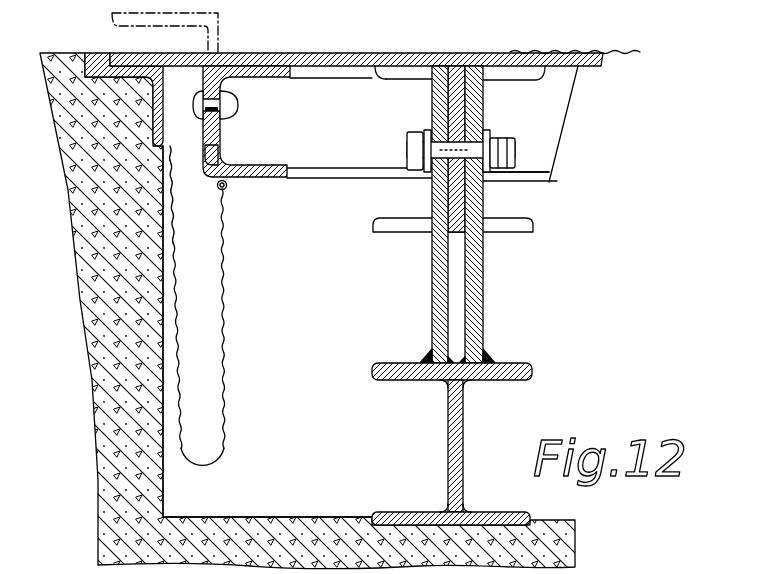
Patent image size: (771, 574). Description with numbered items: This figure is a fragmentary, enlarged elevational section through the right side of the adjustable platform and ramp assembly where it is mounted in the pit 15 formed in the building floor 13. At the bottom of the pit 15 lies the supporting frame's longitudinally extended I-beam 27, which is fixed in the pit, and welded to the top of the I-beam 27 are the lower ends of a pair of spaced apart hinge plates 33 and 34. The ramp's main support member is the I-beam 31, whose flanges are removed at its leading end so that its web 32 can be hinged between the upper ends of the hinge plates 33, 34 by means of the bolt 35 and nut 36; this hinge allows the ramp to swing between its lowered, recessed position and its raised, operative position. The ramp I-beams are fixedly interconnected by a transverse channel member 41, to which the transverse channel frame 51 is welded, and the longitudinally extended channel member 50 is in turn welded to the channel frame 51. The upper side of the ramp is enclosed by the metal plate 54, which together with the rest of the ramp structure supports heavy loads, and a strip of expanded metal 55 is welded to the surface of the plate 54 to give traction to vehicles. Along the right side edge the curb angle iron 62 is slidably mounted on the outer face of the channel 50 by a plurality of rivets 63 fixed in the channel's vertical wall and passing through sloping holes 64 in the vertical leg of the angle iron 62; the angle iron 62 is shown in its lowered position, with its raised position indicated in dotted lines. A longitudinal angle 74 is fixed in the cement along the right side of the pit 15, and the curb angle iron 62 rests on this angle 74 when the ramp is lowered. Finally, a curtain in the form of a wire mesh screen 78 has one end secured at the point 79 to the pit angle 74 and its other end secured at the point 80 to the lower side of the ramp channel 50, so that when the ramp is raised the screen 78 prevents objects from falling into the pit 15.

The floor 13 is at (55, 66).
The pit 15 is at (165, 497).
The I-beam 27 is at (448, 433).
The main support member 31 is at (405, 84).
The web 32 is at (450, 187).
The hinge plate 33 is at (432, 268).
The hinge plate 34 is at (483, 270).
The bolt 35 is at (407, 148).
The nut 36 is at (496, 146).
The transverse channel member 41 is at (549, 150).
The channel member 50 is at (226, 150).
The transverse channel frame 51 is at (326, 152).
The metal plate 54 is at (345, 55).
The strip of expanded metal 55 is at (565, 51).
The right side curb angle iron 62 is at (214, 21).
The rivets 63 is at (238, 105).
The sloping holes 64 is at (210, 145).
The longitudinal angle 74 is at (100, 90).
The wire mesh screen 78 is at (227, 322).
The point 79 is at (170, 138).
The point 80 is at (226, 188).